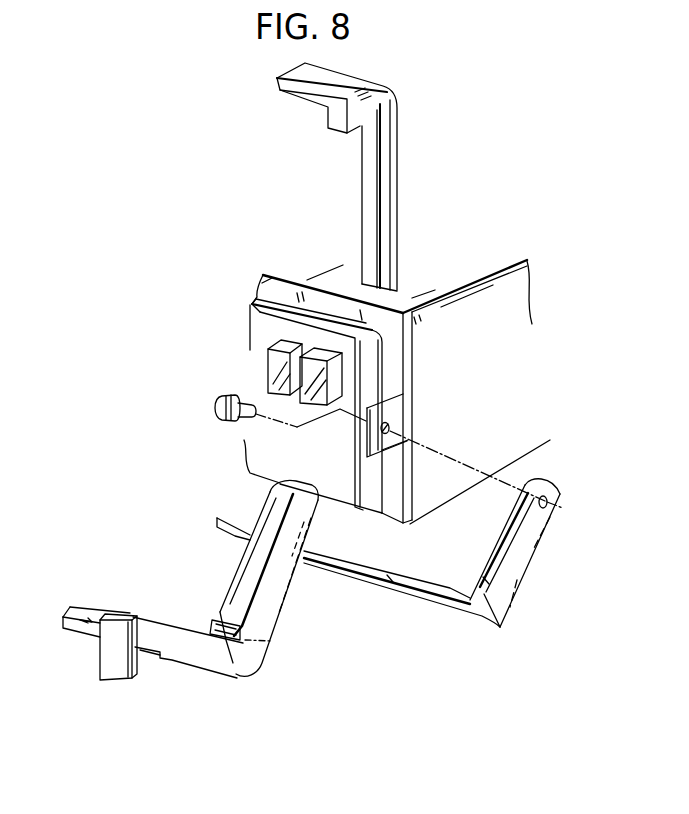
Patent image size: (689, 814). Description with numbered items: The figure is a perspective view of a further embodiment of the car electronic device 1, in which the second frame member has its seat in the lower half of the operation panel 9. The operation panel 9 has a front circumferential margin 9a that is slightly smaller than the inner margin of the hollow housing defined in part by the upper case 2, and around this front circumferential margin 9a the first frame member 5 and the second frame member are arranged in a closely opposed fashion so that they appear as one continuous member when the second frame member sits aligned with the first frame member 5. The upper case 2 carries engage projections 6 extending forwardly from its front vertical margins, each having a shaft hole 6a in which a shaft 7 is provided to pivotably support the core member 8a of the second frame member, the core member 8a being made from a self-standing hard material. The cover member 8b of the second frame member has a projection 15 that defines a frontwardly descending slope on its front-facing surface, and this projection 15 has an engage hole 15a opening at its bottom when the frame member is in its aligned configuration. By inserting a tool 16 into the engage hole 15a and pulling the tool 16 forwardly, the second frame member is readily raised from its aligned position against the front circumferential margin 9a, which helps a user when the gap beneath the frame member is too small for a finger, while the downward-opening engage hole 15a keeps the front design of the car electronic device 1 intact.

The car electronic device 1 is at (228, 268).
The upper case 2 is at (457, 252).
The first frame member 5 is at (381, 116).
The engage projection 6 is at (368, 430).
The shaft hole 6a is at (390, 428).
The shaft 7 is at (220, 395).
The core member 8a is at (390, 592).
The cover member 8b is at (280, 594).
The operation panel 9 is at (293, 338).
The front circumferential margin 9a is at (384, 354).
The projection 15 is at (226, 618).
The engage hole 15a is at (272, 641).
The tool 16 is at (132, 669).